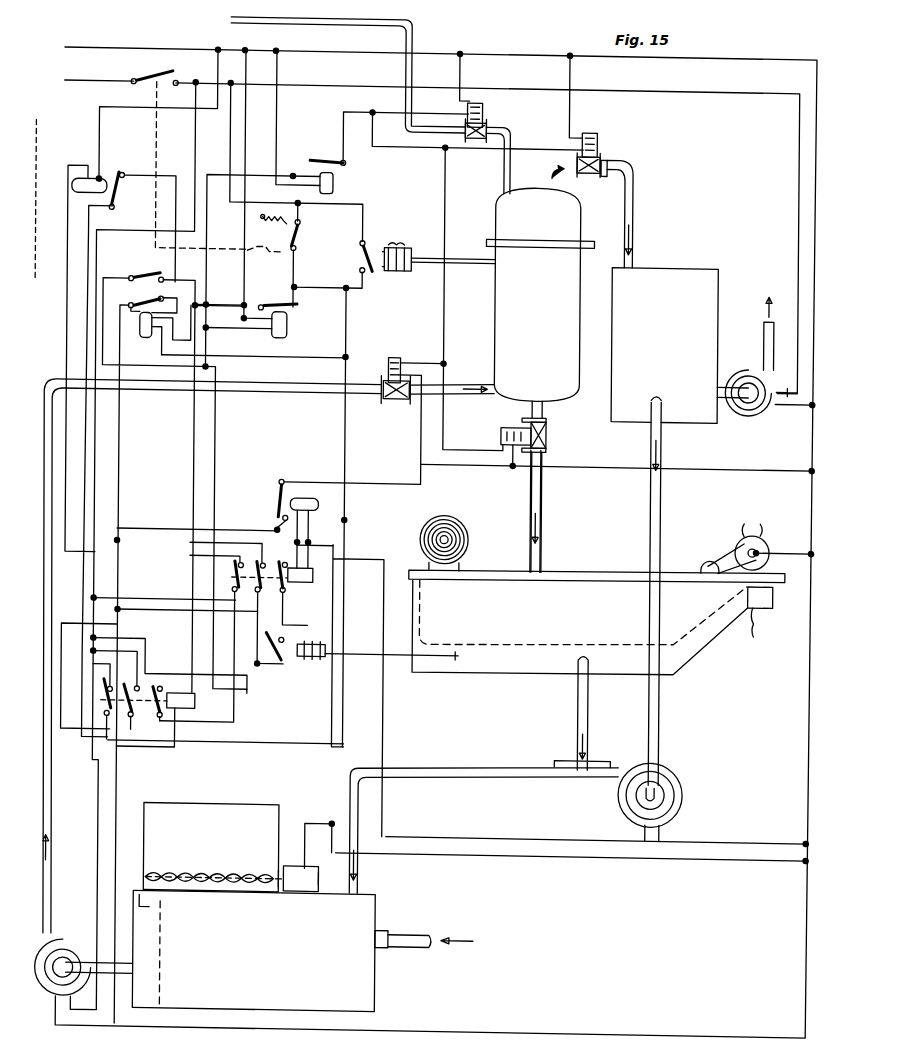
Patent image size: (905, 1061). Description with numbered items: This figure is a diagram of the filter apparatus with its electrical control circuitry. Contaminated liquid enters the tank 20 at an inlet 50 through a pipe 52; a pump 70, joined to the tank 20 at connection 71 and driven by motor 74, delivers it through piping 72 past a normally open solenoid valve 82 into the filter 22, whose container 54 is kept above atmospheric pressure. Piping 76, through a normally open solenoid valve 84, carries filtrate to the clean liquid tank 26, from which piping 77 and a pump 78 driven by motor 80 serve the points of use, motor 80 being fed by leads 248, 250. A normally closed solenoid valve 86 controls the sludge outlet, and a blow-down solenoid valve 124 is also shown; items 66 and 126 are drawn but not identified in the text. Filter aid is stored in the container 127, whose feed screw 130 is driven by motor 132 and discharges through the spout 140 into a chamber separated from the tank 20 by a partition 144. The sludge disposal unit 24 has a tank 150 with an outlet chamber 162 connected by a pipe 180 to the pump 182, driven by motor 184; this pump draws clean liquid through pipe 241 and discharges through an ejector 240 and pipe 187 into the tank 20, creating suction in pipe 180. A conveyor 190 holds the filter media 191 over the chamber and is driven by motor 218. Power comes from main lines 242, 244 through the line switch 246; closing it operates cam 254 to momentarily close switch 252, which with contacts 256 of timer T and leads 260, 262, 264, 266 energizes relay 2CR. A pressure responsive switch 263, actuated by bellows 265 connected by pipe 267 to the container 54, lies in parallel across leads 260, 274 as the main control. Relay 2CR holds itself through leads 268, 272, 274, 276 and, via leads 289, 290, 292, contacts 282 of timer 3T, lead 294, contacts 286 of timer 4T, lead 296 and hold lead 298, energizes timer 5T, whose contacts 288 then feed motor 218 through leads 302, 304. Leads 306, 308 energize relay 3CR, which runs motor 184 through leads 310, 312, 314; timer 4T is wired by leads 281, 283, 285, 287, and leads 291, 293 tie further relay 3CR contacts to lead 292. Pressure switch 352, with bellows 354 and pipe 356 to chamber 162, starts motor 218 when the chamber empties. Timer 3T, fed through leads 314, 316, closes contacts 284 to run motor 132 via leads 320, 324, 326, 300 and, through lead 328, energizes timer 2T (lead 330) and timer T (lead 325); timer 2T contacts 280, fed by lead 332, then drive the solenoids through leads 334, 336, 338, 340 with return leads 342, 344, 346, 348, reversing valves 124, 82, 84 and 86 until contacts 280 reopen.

The tank 20 is at (374, 988).
The filter 22 is at (496, 332).
The sludge disposal unit 24 is at (464, 670).
The clean liquid tank 26 is at (696, 272).
The inlet 50 is at (382, 938).
The pipe 52 is at (412, 929).
The filter container 54 is at (582, 320).
The discharge pipe 66 is at (546, 530).
The pump 70 is at (58, 942).
The connection 71 is at (152, 968).
The piping 72 is at (305, 390).
The electric motor 74 is at (80, 948).
The piping 76 is at (640, 184).
The piping 77 is at (764, 337).
The pump 78 is at (754, 422).
The electric motor 80 is at (737, 418).
The solenoid valve 82 is at (388, 398).
The solenoid valve 84 is at (603, 150).
The solenoid valve 86 is at (549, 432).
The blow-down solenoid valve 124 is at (488, 122).
The pipe 126 is at (511, 135).
The filter aid container 127 is at (200, 802).
The feed screw 130 is at (212, 868).
The electric motor 132 is at (310, 888).
The spout 140 is at (166, 905).
The partition 144 is at (170, 988).
The tank 150 is at (535, 666).
The outlet chamber 162 is at (612, 650).
The pipe 180 is at (590, 716).
The pump 182 is at (688, 786).
The electric motor 184 is at (670, 768).
The pipe 187 is at (450, 770).
The conveyor 190 is at (704, 560).
The filter media 191 is at (712, 630).
The conveyor driving motor 218 is at (748, 530).
The ejector 240 is at (570, 778).
The pipe 241 is at (667, 711).
The main electric line 242 is at (494, 47).
The main electric line 244 is at (488, 81).
The line switch 246 is at (168, 70).
The lead 248 is at (782, 420).
The lead 250 is at (787, 385).
The switch 252 is at (300, 225).
The cam 254 is at (254, 250).
The contacts 256 is at (301, 316).
The lead 260 is at (231, 112).
The lead 262 is at (300, 262).
The pressure responsive switch 263 is at (368, 236).
The lead 264 is at (172, 440).
The bellows 265 is at (396, 266).
The lead 266 is at (124, 760).
The pipe 267 is at (452, 258).
The lead 268 is at (100, 502).
The lead 272 is at (100, 664).
The lead 274 is at (349, 326).
The lead 276 is at (308, 281).
The contacts 280 is at (346, 163).
The lead 281 is at (100, 126).
The contacts 282 is at (132, 300).
The lead 283 is at (46, 199).
The contacts 284 is at (138, 269).
The lead 285 is at (228, 730).
The contacts 286 is at (118, 190).
The lead 287 is at (122, 640).
The contacts 288 is at (280, 476).
The lead 289 is at (136, 658).
The lead 290 is at (68, 622).
The lead 291 is at (249, 676).
The lead 292 is at (125, 412).
The lead 293 is at (288, 630).
The lead 294 is at (163, 178).
The lead 296 is at (90, 478).
The hold circuit lead 298 is at (304, 536).
The lead 300 is at (332, 762).
The lead 302 is at (465, 494).
The lead 304 is at (783, 540).
The lead 306 is at (300, 550).
The lead 308 is at (300, 558).
The lead 310 is at (128, 597).
The lead 312 is at (395, 733).
The lead 314 is at (314, 381).
The lead 316 is at (246, 294).
The lead 320 is at (182, 280).
The lead 324 is at (104, 312).
The lead 325 is at (258, 303).
The lead 326 is at (312, 818).
The lead 328 is at (210, 210).
The lead 330 is at (278, 97).
The lead 332 is at (308, 156).
The lead 334 is at (370, 107).
The lead 336 is at (388, 142).
The lead 338 is at (432, 304).
The lead 340 is at (418, 358).
The lead 342 is at (458, 72).
The lead 344 is at (578, 112).
The lead 346 is at (712, 463).
The lead 348 is at (420, 440).
The pressure responsive switch 352 is at (308, 649).
The bellows 354 is at (312, 656).
The pipe 356 is at (360, 657).
The timer 2T is at (326, 147).
The timer 3T is at (140, 334).
The timer 4T is at (115, 166).
The timer 5T is at (269, 501).
The timer T is at (254, 334).
The relay 2CR is at (191, 715).
The relay 3CR is at (289, 590).